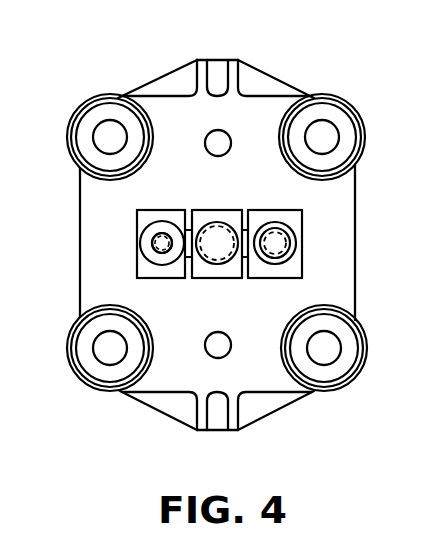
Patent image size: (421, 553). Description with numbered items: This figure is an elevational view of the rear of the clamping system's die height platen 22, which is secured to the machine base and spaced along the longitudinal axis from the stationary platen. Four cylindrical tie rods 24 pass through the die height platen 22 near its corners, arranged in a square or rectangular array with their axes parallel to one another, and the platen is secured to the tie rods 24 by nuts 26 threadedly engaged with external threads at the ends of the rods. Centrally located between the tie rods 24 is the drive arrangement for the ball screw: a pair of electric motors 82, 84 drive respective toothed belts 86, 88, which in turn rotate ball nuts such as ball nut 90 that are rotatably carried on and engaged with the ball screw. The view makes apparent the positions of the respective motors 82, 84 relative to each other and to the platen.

The die height platen 22 is at (356, 289).
The tie rods 24 is at (96, 131).
The nuts 26 is at (103, 110).
The electric motor 82 is at (290, 229).
The electric motor 84 is at (150, 232).
The toothed belt 86 is at (252, 258).
The toothed belt 88 is at (174, 248).
The ball nut 90 is at (217, 247).